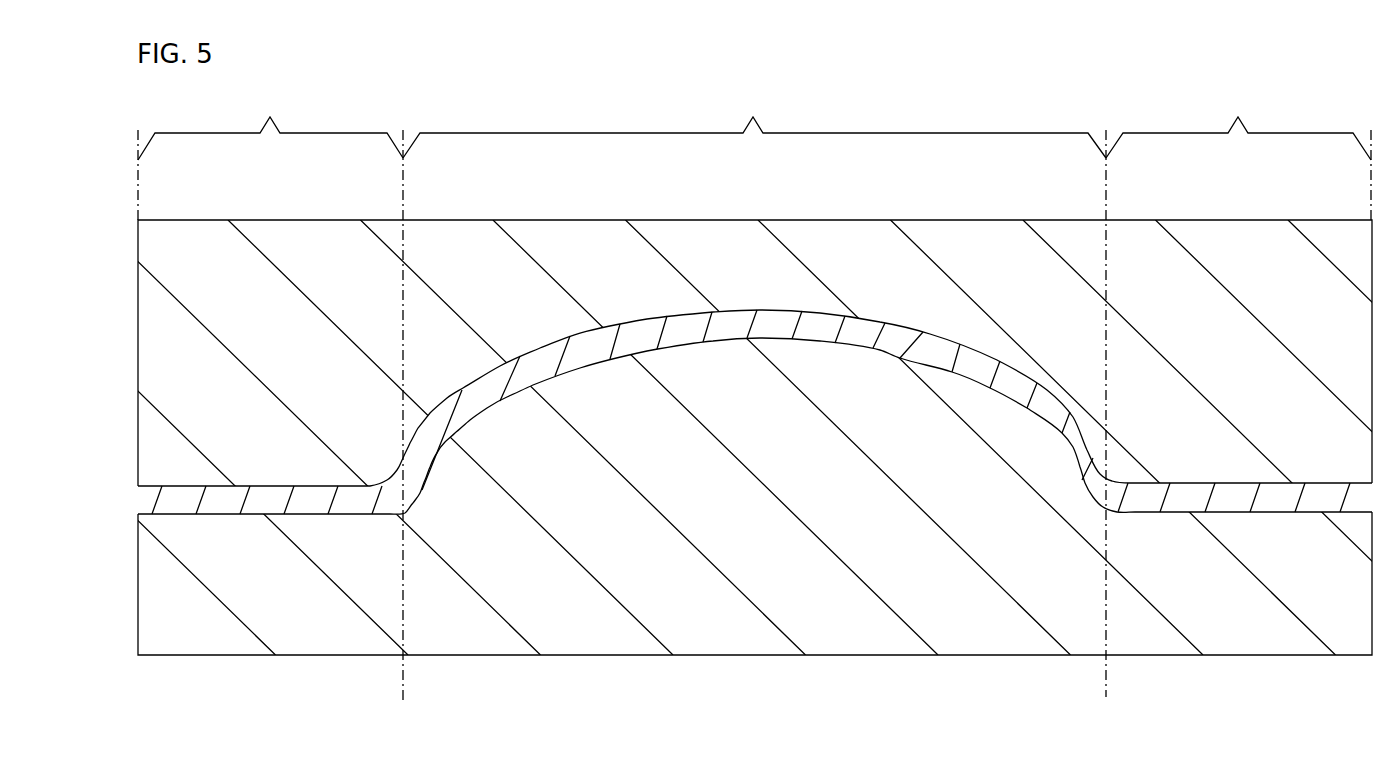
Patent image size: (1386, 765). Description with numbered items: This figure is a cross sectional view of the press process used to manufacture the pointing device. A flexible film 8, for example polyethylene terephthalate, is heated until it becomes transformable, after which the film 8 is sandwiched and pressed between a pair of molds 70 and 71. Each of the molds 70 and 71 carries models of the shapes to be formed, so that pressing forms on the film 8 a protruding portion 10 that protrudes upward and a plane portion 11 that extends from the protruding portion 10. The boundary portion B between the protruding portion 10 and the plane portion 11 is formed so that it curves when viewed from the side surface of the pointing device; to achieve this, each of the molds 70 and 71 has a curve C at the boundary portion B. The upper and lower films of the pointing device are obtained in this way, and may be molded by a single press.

The flexible film 8 is at (772, 311).
The protruding portion 10 is at (754, 124).
The plane portion 11 is at (754, 124).
The mold 70 is at (925, 219).
The mold 71 is at (897, 656).
The boundary portion B is at (753, 402).
The curve C is at (1124, 462).